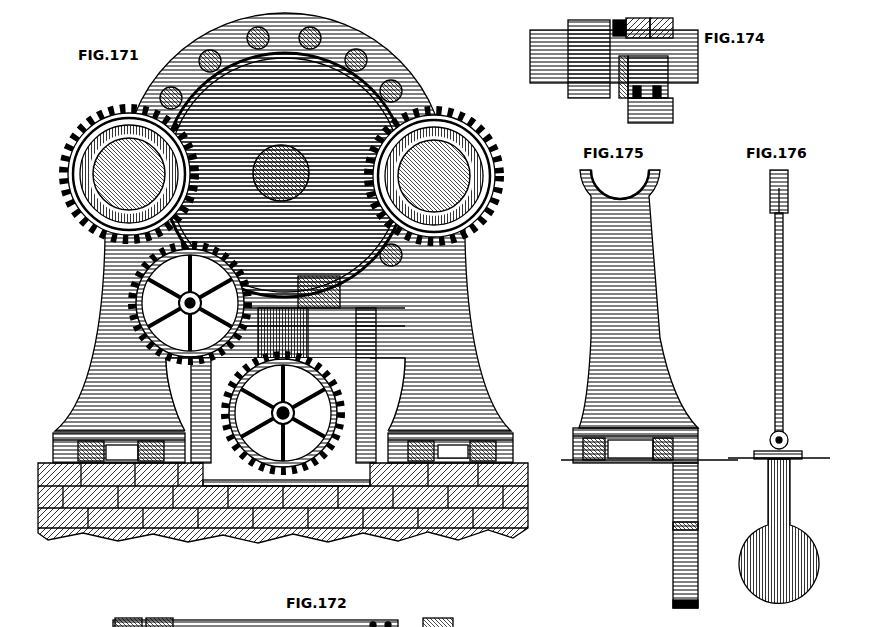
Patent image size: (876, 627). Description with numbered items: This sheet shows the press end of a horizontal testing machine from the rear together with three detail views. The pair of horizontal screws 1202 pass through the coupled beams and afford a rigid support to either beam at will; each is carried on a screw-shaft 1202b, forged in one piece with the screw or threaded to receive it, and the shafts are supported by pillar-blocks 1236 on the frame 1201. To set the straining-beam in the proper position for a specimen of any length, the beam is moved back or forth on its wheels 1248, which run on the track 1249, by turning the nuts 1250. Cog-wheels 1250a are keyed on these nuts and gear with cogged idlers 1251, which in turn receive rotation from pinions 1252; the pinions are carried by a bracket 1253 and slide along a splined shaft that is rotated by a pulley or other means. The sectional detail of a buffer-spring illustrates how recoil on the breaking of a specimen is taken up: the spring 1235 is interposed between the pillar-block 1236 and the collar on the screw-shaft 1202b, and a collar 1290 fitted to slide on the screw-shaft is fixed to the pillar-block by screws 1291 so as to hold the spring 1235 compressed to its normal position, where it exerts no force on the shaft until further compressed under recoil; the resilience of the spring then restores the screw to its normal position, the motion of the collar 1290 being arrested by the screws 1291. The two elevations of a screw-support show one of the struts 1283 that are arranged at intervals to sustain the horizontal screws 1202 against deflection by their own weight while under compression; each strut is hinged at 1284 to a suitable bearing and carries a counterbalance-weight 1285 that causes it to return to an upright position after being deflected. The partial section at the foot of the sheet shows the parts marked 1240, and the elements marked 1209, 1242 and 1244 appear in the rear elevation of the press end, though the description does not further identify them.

In FIG. 174, the frame 1201 is at (664, 110).
In FIG. 171, the horizontal screw 1202 is at (281, 175).
In FIG. 174, the screw-shaft 1202b is at (631, 49).
In FIG. 174, the collar 1209 is at (589, 53).
In FIG. 174, the buffer-spring 1235 is at (648, 77).
In FIG. 174, the pillar-block 1236 is at (673, 27).
In FIG. 172, the bar 1240 is at (282, 616).
In FIG. 171, the disk 1242 is at (283, 162).
In FIG. 171, the shaft 1244 is at (282, 403).
In FIG. 171, the wheel 1248 is at (284, 385).
In FIG. 171, the track 1249 is at (286, 477).
In FIG. 171, the nut 1250 is at (281, 175).
In FIG. 171, the cog-wheel 1250a is at (297, 171).
In FIG. 171, the cogged idler 1251 is at (266, 303).
In FIG. 171, the pinion 1252 is at (283, 413).
In FIG. 171, the bracket 1253 is at (286, 318).
In FIG. 171, the strut 1283 is at (283, 222).
In FIG. 175, the strut 1283 is at (638, 299).
In FIG. 176, the strut 1283 is at (790, 302).
In FIG. 171, the hinge 1284 is at (300, 448).
In FIG. 175, the hinge 1284 is at (649, 445).
In FIG. 176, the hinge 1284 is at (785, 445).
In FIG. 175, the counterbalance-weight 1285 is at (670, 535).
In FIG. 176, the counterbalance-weight 1285 is at (763, 531).
In FIG. 174, the collar 1290 is at (612, 77).
In FIG. 174, the screw 1291 is at (639, 28).